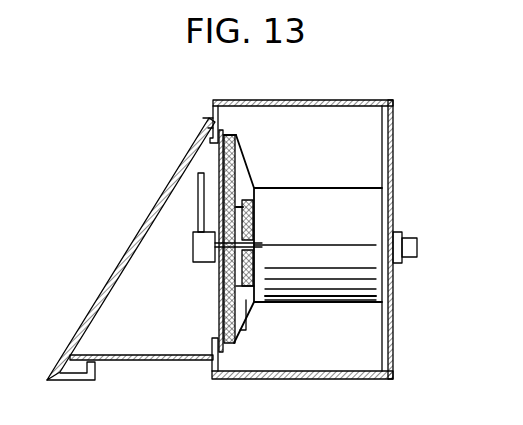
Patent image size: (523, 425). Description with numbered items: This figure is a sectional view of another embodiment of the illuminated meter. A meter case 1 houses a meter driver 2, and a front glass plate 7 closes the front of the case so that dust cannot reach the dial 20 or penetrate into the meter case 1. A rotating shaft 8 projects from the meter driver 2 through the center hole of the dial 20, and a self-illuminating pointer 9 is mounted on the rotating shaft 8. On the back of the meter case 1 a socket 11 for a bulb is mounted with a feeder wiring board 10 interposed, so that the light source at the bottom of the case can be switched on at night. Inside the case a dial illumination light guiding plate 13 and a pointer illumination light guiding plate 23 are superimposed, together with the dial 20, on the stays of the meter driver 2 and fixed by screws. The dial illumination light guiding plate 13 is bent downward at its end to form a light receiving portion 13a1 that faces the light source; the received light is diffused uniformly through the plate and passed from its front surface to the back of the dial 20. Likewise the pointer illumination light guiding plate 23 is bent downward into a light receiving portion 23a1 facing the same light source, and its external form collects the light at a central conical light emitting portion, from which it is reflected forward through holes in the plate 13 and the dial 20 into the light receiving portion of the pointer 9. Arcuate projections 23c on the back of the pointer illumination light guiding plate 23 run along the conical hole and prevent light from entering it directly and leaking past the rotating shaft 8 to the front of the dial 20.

The meter case 1 is at (363, 378).
The meter driver 2 is at (365, 276).
The front glass plate 7 is at (113, 263).
The rotating shaft 8 is at (255, 248).
The pointer 9 is at (197, 207).
The feeder wiring board 10 is at (393, 176).
The socket 11 is at (418, 247).
The dial illumination light guiding plate 13 is at (220, 162).
The light receiving portion 13a1 is at (235, 155).
The dial 20 is at (220, 302).
The pointer illumination light guiding plate 23 is at (255, 188).
The light receiving portion 23a1 is at (250, 337).
The arcuate projection 23c is at (256, 231).